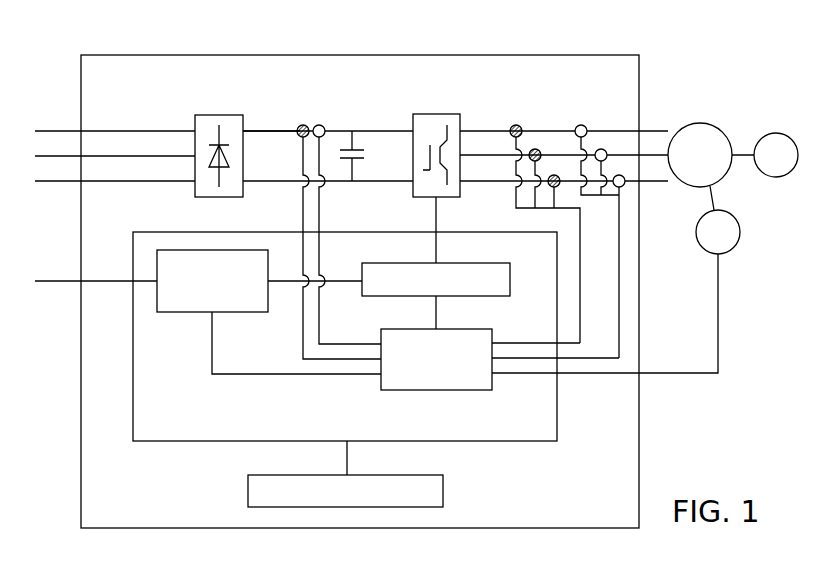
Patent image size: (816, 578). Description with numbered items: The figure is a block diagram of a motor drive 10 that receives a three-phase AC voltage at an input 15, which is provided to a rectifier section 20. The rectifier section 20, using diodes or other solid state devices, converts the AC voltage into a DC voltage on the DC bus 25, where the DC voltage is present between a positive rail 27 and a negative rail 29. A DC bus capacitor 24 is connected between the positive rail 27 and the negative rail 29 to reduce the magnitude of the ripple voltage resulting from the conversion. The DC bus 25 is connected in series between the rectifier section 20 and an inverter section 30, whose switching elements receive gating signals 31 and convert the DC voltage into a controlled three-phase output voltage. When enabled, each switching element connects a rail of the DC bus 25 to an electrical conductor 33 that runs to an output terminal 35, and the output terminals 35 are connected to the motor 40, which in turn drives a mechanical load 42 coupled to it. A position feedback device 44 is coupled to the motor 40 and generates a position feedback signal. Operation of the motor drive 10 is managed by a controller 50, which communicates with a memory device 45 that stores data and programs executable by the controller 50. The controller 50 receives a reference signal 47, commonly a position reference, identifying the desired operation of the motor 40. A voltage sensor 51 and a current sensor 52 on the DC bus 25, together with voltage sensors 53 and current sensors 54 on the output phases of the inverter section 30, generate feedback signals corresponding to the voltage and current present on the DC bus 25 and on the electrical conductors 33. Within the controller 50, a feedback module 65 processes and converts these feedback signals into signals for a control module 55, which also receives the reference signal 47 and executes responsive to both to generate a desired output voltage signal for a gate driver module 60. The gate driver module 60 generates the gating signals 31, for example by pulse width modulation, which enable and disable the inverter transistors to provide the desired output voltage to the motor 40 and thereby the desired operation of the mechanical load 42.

The motor drive 10 is at (617, 26).
The input 15 is at (66, 127).
The rectifier section 20 is at (233, 114).
The DC bus capacitor 24 is at (371, 157).
The DC bus 25 is at (253, 139).
The positive rail 27 is at (255, 131).
The negative rail 29 is at (252, 173).
The inverter section 30 is at (437, 114).
The gating signals 31 is at (436, 205).
The electrical conductor 33 is at (489, 184).
The output terminal 35 is at (653, 117).
The motor 40 is at (718, 126).
The mechanical load 42 is at (758, 176).
The position feedback device 44 is at (736, 243).
The memory device 45 is at (405, 475).
The reference signal 47 is at (103, 281).
The controller 50 is at (188, 233).
The voltage sensor 51 is at (303, 120).
The current sensor 52 is at (321, 122).
The voltage sensors 53 is at (554, 175).
The current sensors 54 is at (619, 175).
The control module 55 is at (200, 312).
The gate driver module 60 is at (475, 296).
The feedback module 65 is at (437, 390).